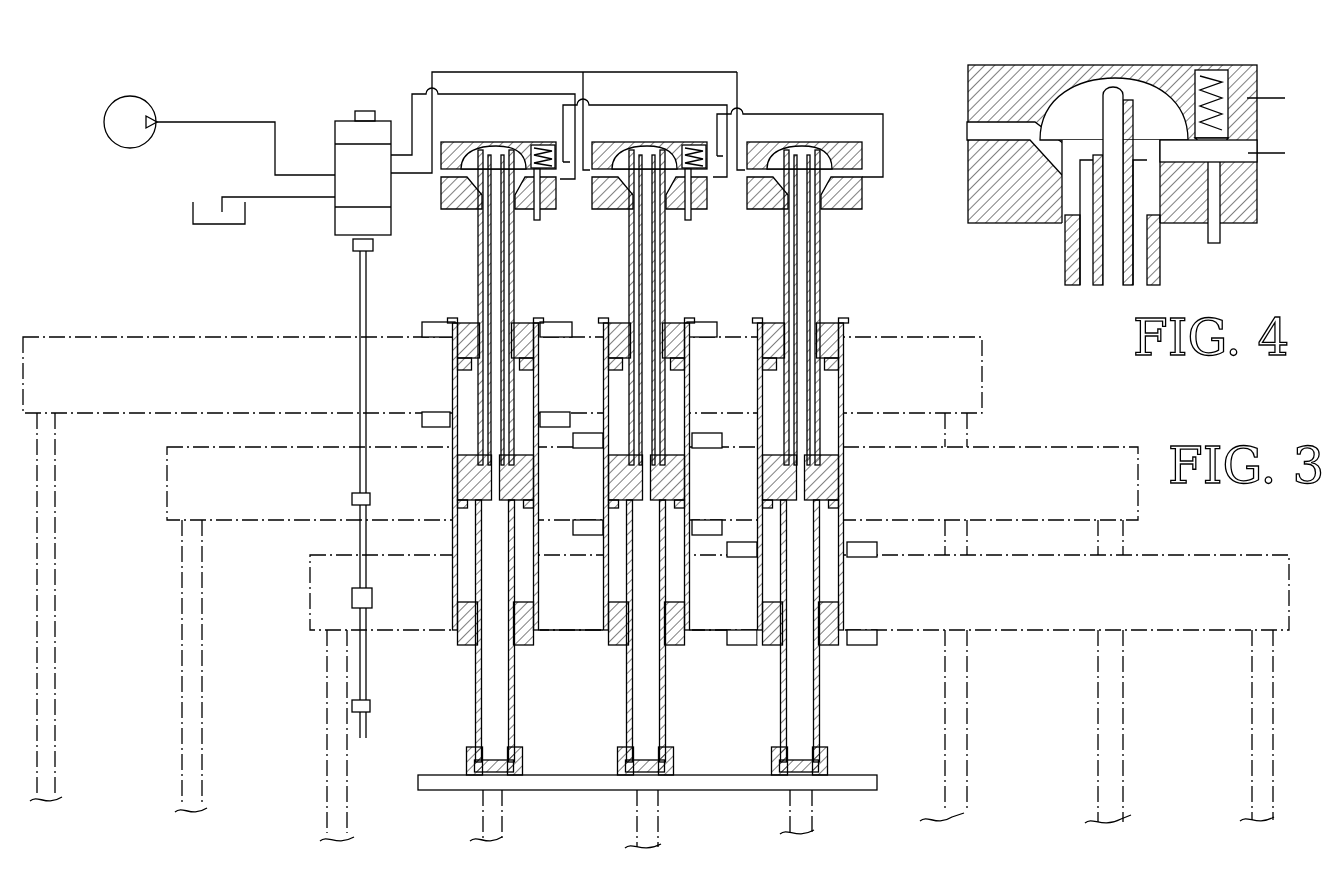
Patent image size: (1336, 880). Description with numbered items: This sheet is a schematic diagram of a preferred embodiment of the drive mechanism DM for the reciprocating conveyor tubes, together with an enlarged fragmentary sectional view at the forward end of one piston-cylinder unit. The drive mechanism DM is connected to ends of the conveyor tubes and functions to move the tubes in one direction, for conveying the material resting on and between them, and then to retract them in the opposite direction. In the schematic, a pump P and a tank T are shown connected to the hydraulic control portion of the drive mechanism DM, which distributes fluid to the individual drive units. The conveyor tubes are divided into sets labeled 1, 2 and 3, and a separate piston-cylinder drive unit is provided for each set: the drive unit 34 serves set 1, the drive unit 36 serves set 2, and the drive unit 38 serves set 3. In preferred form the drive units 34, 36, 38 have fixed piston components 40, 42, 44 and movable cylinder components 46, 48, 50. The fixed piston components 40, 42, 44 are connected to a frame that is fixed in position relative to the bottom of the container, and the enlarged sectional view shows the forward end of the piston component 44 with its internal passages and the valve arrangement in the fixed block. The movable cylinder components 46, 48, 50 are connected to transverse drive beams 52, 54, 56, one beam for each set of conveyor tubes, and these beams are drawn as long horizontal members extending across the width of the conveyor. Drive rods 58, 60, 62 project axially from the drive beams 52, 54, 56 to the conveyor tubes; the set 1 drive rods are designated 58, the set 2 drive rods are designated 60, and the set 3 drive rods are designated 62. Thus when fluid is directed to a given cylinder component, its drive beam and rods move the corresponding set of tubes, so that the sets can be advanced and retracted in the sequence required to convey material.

In FIG. 3, the pump P is at (120, 130).
In FIG. 3, the tank T is at (205, 225).
In FIG. 3, the drive mechanism DM is at (470, 252).
In FIG. 3, the drive unit 34 is at (543, 366).
In FIG. 3, the drive unit 36 is at (693, 366).
In FIG. 3, the drive unit 38 is at (847, 366).
In FIG. 3, the fixed piston component 40 is at (822, 245).
In FIG. 3, the fixed piston component 42 is at (667, 245).
In FIG. 3, the fixed piston component 44 is at (516, 245).
In FIG. 4, the fixed piston component 44 is at (1162, 274).
In FIG. 3, the movable cylinder component 46 is at (843, 481).
In FIG. 3, the movable cylinder component 48 is at (690, 481).
In FIG. 3, the movable cylinder component 50 is at (538, 481).
In FIG. 3, the transverse drive beam 52 is at (944, 388).
In FIG. 3, the transverse drive beam 54 is at (980, 488).
In FIG. 3, the transverse drive beam 56 is at (1032, 610).
In FIG. 3, the drive rods 58 is at (53, 772).
In FIG. 3, the drive rods 60 is at (197, 773).
In FIG. 3, the drive rods 62 is at (343, 773).
In FIG. 3, the set 1 is at (50, 812).
In FIG. 3, the set 2 is at (195, 820).
In FIG. 3, the set 3 is at (337, 850).